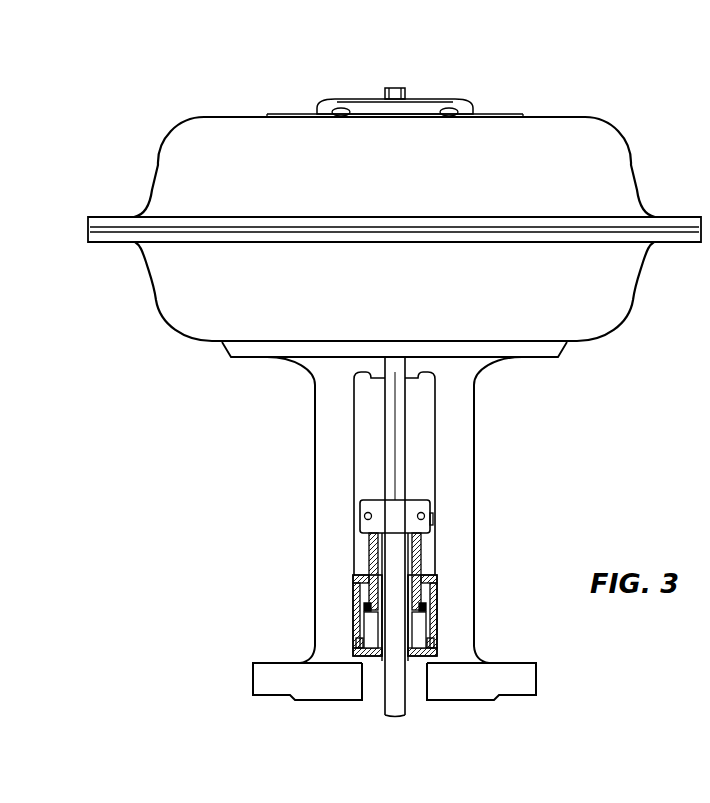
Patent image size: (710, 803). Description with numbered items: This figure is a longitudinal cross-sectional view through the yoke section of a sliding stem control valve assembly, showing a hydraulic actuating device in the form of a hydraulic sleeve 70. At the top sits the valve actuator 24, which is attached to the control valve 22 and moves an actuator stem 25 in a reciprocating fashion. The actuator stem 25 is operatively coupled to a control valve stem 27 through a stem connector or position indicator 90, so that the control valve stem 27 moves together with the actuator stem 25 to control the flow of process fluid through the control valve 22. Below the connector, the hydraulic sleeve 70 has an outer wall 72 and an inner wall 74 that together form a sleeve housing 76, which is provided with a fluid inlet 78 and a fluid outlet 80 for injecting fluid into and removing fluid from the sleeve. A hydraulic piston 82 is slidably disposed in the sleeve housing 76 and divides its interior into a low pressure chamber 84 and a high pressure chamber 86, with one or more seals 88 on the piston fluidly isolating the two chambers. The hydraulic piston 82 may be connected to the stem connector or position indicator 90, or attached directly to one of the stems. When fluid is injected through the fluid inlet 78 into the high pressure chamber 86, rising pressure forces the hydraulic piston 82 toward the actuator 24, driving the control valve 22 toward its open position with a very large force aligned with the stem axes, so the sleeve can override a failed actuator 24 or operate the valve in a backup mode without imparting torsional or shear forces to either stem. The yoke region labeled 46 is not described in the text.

The control valve 22 is at (641, 277).
The valve actuator 24 is at (631, 336).
The actuator stem 25 is at (395, 420).
The control valve stem 27 is at (393, 552).
The bonnet 46 is at (474, 450).
The hydraulic sleeve 70 is at (397, 637).
The outer wall 72 is at (433, 640).
The inner wall 74 is at (412, 642).
The sleeve housing 76 is at (350, 676).
The fluid inlet 78 is at (358, 642).
The fluid outlet 80 is at (432, 588).
The hydraulic piston 82 is at (417, 553).
The low pressure chamber 84 is at (375, 587).
The high pressure chamber 86 is at (370, 630).
The seals 88 is at (367, 608).
The stem connector or position indicator 90 is at (420, 506).